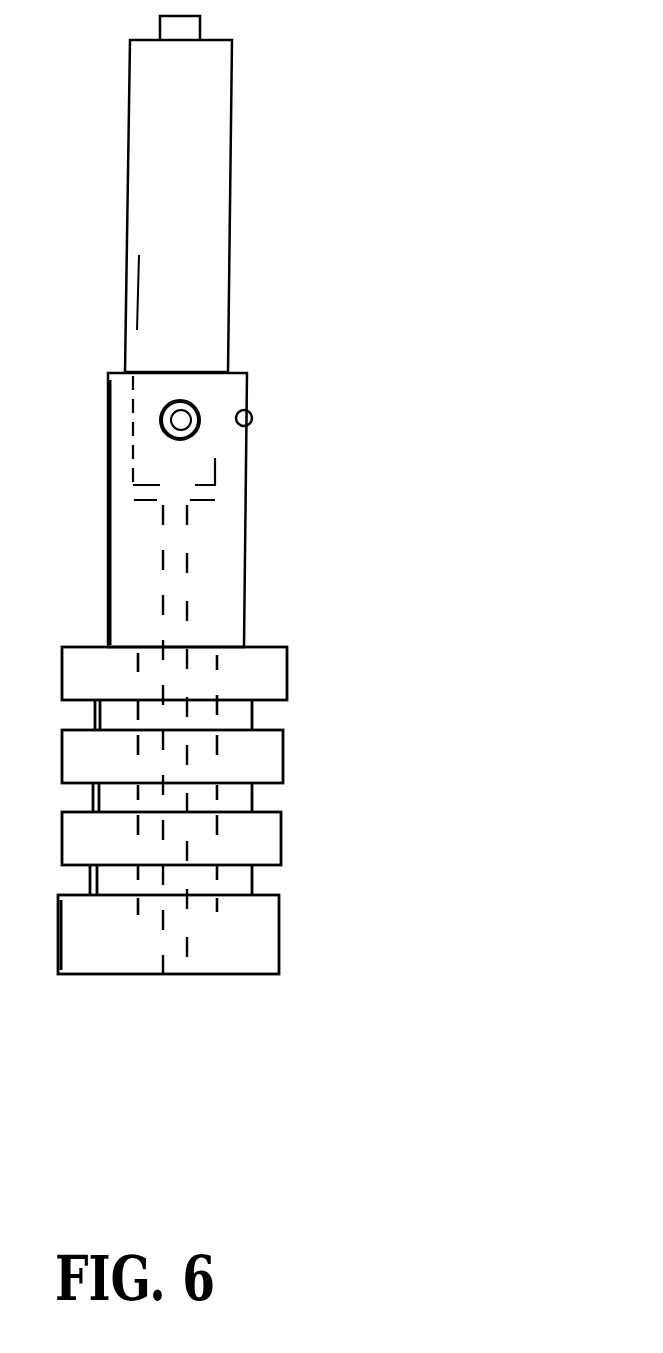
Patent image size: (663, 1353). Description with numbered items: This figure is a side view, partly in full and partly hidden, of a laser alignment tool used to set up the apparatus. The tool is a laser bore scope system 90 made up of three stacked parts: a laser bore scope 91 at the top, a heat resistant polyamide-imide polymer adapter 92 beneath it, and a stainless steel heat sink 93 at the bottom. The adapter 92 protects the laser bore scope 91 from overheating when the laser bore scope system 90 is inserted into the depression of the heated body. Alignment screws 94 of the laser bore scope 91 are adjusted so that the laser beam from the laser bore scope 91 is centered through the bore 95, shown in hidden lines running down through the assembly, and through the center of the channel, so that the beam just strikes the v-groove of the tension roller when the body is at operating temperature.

The laser bore scope system 90 is at (442, 413).
The laser bore scope 91 is at (198, 238).
The adapter 92 is at (222, 533).
The heat sink 93 is at (268, 838).
The alignment screws 94 is at (205, 412).
The bore 95 is at (183, 993).